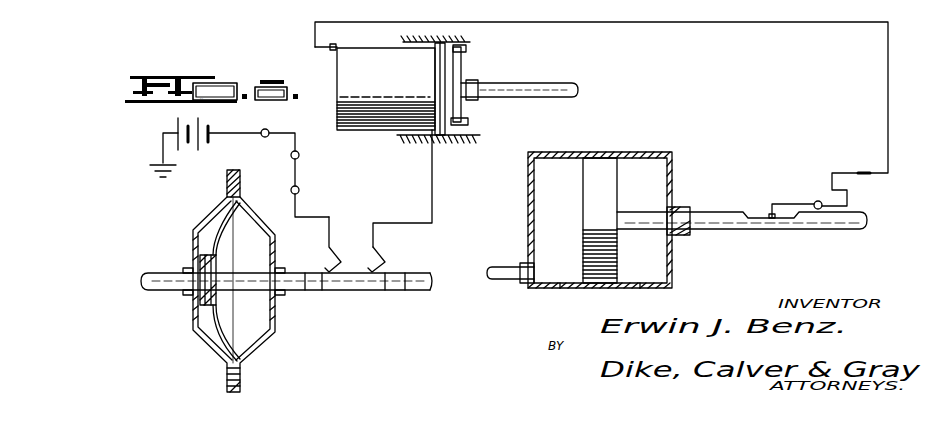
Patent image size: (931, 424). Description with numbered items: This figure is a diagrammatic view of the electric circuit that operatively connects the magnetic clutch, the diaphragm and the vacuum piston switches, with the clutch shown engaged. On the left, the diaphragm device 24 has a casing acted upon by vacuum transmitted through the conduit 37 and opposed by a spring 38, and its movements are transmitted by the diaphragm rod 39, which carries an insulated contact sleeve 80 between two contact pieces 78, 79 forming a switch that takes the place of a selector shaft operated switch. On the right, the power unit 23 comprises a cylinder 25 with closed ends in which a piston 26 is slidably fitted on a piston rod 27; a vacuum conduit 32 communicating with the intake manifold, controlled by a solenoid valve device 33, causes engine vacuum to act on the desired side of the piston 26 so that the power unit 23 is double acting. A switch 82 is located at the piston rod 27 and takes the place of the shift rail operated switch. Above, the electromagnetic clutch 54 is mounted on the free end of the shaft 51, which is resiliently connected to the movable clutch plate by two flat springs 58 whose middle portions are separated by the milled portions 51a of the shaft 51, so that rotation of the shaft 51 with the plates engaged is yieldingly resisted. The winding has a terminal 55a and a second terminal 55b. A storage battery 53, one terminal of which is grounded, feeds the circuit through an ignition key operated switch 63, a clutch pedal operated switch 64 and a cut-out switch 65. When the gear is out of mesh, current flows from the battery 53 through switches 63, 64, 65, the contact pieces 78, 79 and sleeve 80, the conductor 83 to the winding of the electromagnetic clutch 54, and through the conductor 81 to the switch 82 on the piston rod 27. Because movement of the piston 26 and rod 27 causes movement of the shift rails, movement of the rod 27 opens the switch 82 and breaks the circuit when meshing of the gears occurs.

The power cylinder or unit 23 is at (627, 291).
The diaphragm device 24 is at (252, 358).
The cylinder 25 is at (672, 156).
The piston 26 is at (600, 170).
The piston rod 27 is at (700, 220).
The vacuum conduit 32 is at (500, 282).
The solenoid valve device 33 is at (213, 348).
The conduit 37 is at (162, 272).
The spring 38 is at (200, 310).
The diaphragm rod 39 is at (291, 293).
The shaft 51 is at (566, 82).
The milled portions 51a is at (472, 80).
The storage battery 53 is at (206, 132).
The electromagnetic clutch 54 is at (333, 61).
The terminal of the winding 55a is at (433, 141).
The second terminal of the winding 55b is at (336, 48).
The flat springs 58 is at (471, 53).
The ignition key operated switch 63 is at (265, 129).
The clutch pedal operated switch 64 is at (299, 155).
The cut-out switch 65 is at (291, 190).
The contact piece 78 is at (340, 247).
The contact piece 79 is at (386, 258).
The insulated contact sleeve 80 is at (355, 292).
The conductor 81 is at (752, 23).
The switch 82 is at (791, 203).
The conductor 83 is at (434, 206).